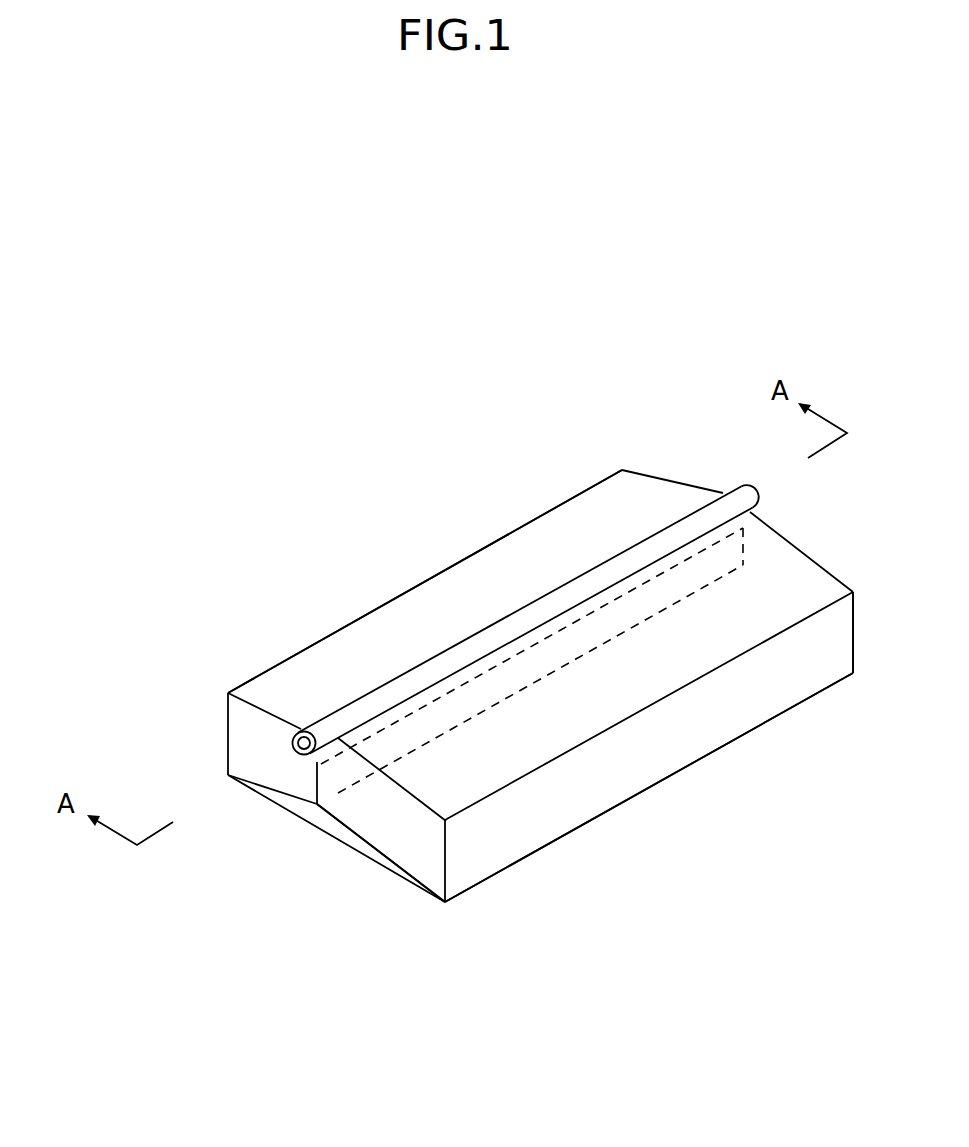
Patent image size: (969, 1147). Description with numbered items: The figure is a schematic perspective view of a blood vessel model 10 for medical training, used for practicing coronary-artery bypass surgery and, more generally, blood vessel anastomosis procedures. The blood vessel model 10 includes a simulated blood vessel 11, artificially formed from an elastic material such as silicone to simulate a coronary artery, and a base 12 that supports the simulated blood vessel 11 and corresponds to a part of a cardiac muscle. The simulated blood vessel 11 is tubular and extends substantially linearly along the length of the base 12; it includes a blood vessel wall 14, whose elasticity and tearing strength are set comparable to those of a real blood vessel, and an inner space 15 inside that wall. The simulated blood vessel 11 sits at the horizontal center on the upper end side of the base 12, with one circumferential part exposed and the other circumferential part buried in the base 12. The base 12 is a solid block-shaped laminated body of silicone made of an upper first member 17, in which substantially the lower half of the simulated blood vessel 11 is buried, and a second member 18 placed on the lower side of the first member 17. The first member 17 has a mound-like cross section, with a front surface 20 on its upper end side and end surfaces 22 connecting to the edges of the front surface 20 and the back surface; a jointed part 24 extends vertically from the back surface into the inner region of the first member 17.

The blood vessel model 10 is at (493, 465).
The simulated blood vessel 11 is at (409, 664).
The base 12 is at (497, 913).
The blood vessel wall 14 is at (507, 619).
The inner space 15 is at (293, 749).
The first member 17 is at (644, 776).
The second member 18 is at (347, 838).
The front surface 20 is at (327, 662).
The end surfaces 22 is at (742, 718).
The jointed part 24 is at (491, 690).